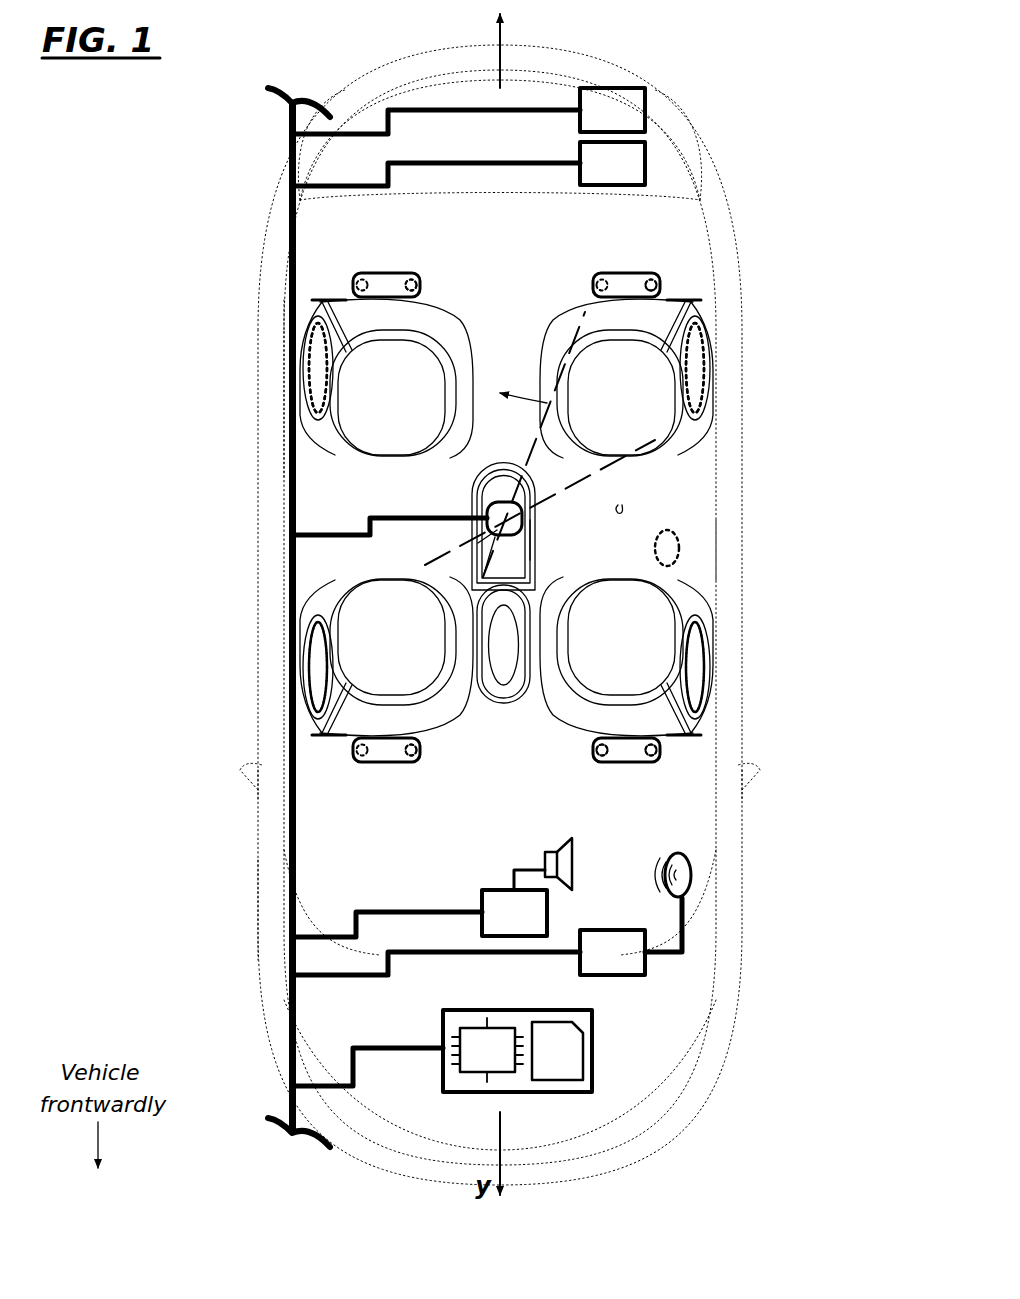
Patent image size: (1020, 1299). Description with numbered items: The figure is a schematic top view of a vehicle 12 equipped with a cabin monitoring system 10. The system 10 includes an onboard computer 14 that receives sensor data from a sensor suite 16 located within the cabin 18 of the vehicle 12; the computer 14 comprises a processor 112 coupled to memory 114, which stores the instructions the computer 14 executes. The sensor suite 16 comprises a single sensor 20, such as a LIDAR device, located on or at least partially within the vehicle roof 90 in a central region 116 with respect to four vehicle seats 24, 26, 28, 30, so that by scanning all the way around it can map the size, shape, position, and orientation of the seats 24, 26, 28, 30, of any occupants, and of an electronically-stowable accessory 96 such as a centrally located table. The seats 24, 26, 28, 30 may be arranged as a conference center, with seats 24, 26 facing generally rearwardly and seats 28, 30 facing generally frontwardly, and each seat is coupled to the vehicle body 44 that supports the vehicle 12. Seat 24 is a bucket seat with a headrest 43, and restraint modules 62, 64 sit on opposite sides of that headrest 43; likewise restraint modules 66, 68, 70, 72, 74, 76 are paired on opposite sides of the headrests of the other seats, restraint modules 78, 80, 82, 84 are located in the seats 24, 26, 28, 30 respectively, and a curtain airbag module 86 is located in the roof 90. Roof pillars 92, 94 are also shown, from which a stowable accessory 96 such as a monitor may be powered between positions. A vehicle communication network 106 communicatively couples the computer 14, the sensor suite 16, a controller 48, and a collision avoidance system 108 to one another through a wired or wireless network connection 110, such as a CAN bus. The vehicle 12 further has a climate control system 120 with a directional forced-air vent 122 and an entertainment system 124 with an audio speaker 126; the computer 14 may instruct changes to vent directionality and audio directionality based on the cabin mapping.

The cabin monitoring system 10 is at (180, 128).
The vehicle 12 is at (692, 72).
The onboard computer 14 is at (596, 1049).
The sensor suite 16 is at (507, 497).
The cabin 18 is at (622, 502).
The sensor 20 is at (490, 512).
The vehicle seat 24 is at (612, 654).
The vehicle seat 26 is at (376, 654).
The vehicle seat 28 is at (376, 414).
The vehicle seat 30 is at (610, 414).
The headrest 43 is at (615, 740).
The vehicle body 44 is at (262, 905).
The controller 48 is at (600, 175).
The vehicle restraint module 62 is at (650, 763).
The vehicle restraint module 64 is at (594, 763).
The vehicle restraint module 66 is at (414, 763).
The vehicle restraint module 68 is at (358, 763).
The vehicle restraint module 70 is at (358, 272).
The vehicle restraint module 72 is at (414, 272).
The vehicle restraint module 74 is at (593, 272).
The vehicle restraint module 76 is at (648, 272).
The vehicle restraint module 78 is at (700, 652).
The vehicle restraint module 80 is at (310, 665).
The vehicle restraint module 82 is at (308, 368).
The vehicle restraint module 84 is at (700, 390).
The curtain airbag module 86 is at (672, 560).
The vehicle roof 90 is at (323, 470).
The roof pillar 92 is at (750, 552).
The roof pillar 94 is at (289, 545).
The electronically-stowable accessory 96 is at (535, 540).
The vehicle communication network 106 is at (289, 143).
The collision avoidance system 108 is at (594, 122).
The network connection 110 is at (292, 228).
The processor 112 is at (505, 1061).
The memory 114 is at (576, 1061).
The central region 116 is at (637, 477).
The climate control system 120 is at (594, 965).
The directional forced-air vent 122 is at (692, 868).
The entertainment system 124 is at (496, 925).
The audio speaker 126 is at (575, 858).